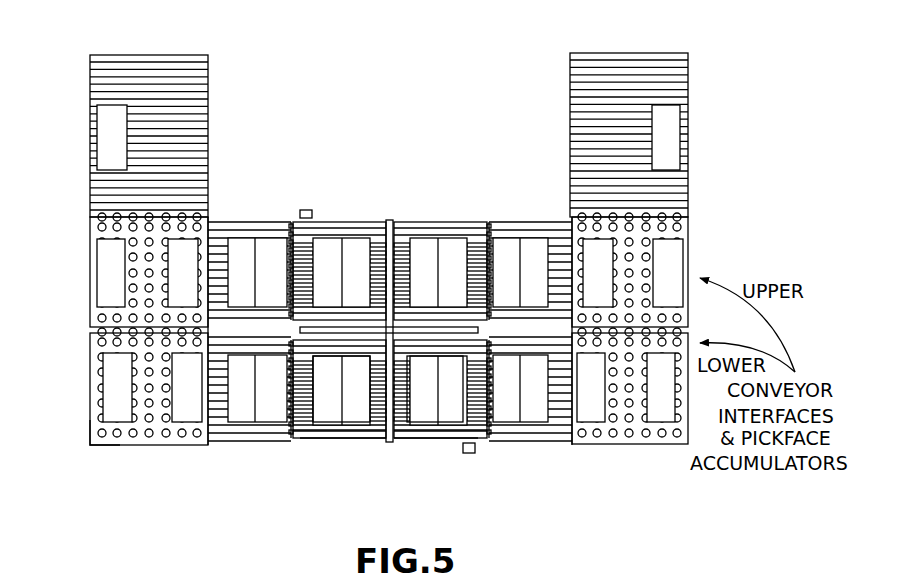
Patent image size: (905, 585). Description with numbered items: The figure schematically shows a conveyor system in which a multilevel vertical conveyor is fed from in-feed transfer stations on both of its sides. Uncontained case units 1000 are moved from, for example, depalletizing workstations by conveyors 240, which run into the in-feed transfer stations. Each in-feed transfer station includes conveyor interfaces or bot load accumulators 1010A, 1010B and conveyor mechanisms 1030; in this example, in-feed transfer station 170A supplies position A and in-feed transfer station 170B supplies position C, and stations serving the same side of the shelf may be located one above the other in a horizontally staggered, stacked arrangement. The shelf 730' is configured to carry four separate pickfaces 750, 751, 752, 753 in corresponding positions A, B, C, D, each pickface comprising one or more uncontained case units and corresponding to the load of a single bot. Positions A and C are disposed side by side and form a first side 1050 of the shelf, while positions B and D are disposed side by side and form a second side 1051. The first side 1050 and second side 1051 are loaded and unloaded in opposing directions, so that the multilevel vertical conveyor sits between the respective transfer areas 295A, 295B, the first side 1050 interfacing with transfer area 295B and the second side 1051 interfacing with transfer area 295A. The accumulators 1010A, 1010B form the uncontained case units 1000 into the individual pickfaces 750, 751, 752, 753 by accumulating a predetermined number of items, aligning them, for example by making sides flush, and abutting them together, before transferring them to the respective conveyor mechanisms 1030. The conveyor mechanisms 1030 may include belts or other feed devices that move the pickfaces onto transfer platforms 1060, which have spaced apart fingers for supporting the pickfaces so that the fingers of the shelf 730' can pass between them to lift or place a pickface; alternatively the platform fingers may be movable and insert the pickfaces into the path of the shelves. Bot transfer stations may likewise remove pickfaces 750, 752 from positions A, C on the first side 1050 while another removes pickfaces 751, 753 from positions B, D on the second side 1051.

The conveyor 240 is at (160, 52).
The uncontained case unit 1000 is at (112, 142).
The in-feed transfer station 170B is at (108, 274).
The in-feed transfer station 170A is at (90, 365).
The conveyor interface/bot load accumulator 1010B is at (98, 310).
The conveyor interface/bot load accumulator 1010A is at (90, 427).
The transfer area 295A is at (748, 216).
The transfer area 295B is at (108, 366).
The pickface 752 is at (356, 245).
The pickface 753 is at (422, 245).
The pickface 750 is at (322, 410).
The pickface 751 is at (483, 440).
The shelf 730' is at (395, 278).
The conveyor mechanism 1030 is at (532, 445).
The first side 1050 is at (348, 455).
The second side 1051 is at (438, 454).
The transfer platform 1060 is at (363, 437).
The position A is at (343, 426).
The position B is at (425, 426).
The position C is at (327, 218).
The position D is at (443, 218).